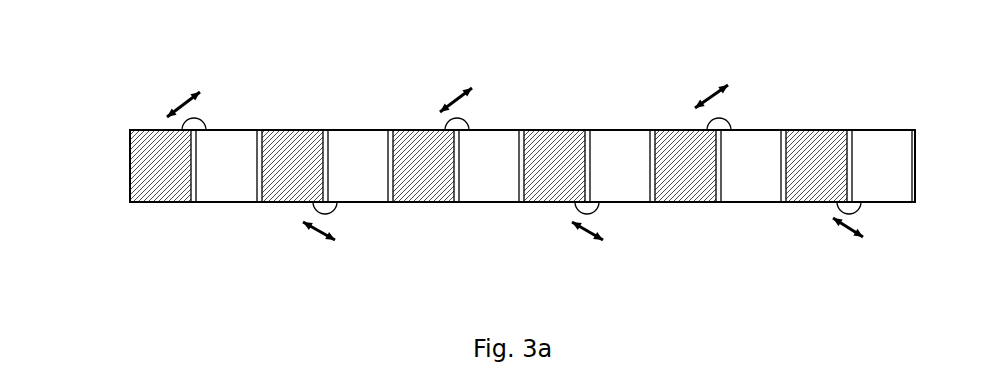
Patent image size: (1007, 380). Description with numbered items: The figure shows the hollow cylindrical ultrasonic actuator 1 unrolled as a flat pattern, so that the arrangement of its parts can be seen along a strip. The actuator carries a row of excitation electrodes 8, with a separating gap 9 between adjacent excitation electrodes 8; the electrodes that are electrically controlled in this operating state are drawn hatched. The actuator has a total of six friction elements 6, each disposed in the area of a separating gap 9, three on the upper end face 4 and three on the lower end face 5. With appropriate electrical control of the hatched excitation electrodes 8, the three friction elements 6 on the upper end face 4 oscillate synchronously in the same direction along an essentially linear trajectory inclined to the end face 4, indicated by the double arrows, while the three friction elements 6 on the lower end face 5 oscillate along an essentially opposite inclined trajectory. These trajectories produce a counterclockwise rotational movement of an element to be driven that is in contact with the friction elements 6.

The ultrasonic actuator 1 is at (133, 92).
The upper end face 4 is at (878, 130).
The lower end face 5 is at (158, 204).
The friction element 6 is at (200, 120).
The excitation electrode 8 is at (300, 150).
The separating gap 9 is at (785, 150).